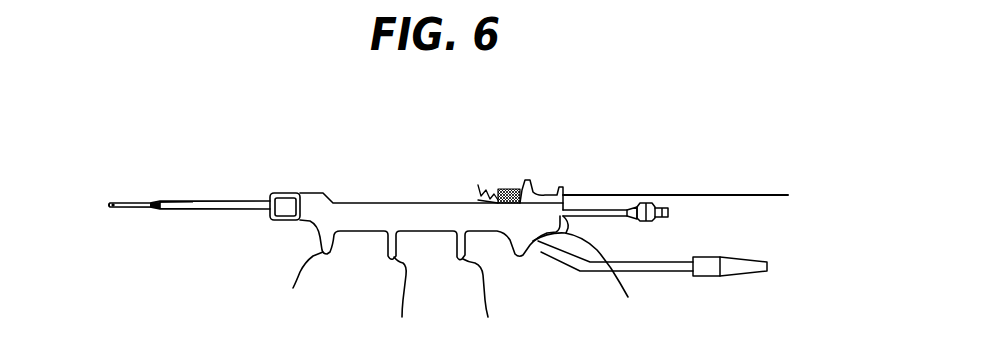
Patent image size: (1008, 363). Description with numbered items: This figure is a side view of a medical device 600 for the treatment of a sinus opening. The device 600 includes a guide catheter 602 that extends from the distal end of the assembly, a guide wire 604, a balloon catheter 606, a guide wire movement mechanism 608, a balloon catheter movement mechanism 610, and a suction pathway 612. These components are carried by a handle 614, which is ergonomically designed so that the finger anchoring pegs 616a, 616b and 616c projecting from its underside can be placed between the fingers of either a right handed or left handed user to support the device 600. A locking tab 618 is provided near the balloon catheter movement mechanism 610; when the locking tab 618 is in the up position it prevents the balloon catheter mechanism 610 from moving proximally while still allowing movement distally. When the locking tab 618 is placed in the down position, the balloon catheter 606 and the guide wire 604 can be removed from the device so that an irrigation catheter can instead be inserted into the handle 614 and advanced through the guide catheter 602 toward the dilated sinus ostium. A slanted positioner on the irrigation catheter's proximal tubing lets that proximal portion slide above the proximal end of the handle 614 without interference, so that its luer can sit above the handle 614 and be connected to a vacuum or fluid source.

The medical device 600 is at (358, 274).
The guide catheter 602 is at (210, 226).
The guide wire 604 is at (647, 178).
The balloon catheter 606 is at (610, 216).
The guide wire movement mechanism 608 is at (488, 186).
The balloon catheter movement mechanism 610 is at (547, 188).
The suction pathway 612 is at (567, 267).
The handle 614 is at (358, 203).
The finger anchoring peg 616a is at (293, 288).
The finger anchoring peg 616b is at (403, 303).
The finger anchoring peg 616c is at (492, 303).
The locking tab 618 is at (628, 297).